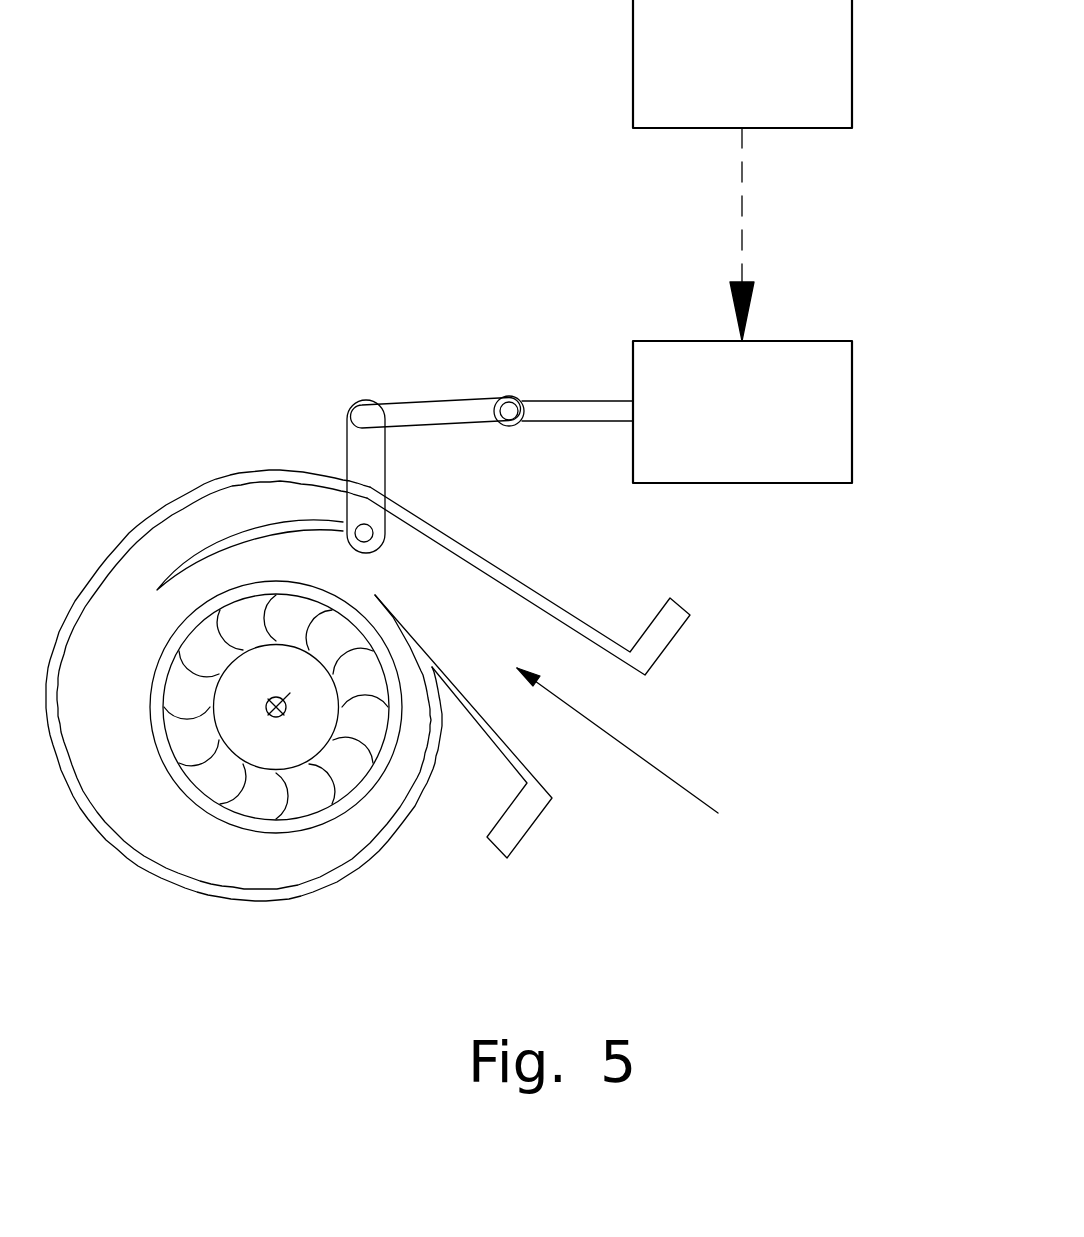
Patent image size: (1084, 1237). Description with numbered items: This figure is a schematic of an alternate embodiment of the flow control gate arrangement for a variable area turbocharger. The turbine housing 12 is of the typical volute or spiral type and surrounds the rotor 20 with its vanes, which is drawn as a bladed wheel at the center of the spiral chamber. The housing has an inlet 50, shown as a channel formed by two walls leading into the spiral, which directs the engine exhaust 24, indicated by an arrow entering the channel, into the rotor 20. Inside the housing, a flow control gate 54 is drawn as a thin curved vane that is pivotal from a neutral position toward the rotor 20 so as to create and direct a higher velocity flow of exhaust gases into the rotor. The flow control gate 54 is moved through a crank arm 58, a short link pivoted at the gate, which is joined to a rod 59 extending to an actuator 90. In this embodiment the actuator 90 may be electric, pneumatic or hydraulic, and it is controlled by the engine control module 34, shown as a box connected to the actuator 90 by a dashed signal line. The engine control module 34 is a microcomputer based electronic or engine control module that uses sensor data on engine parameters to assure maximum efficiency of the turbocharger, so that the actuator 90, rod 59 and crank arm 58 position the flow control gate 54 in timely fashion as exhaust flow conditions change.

The turbine housing 12 is at (177, 499).
The rotor 20 is at (262, 803).
The engine exhaust 24 is at (718, 813).
The engine control module (ECM) 34 is at (788, 128).
The inlet 50 is at (623, 683).
The flow control gate 54 is at (231, 528).
The crank arm 58 is at (375, 454).
The rod 59 is at (441, 404).
The actuator 90 is at (790, 341).